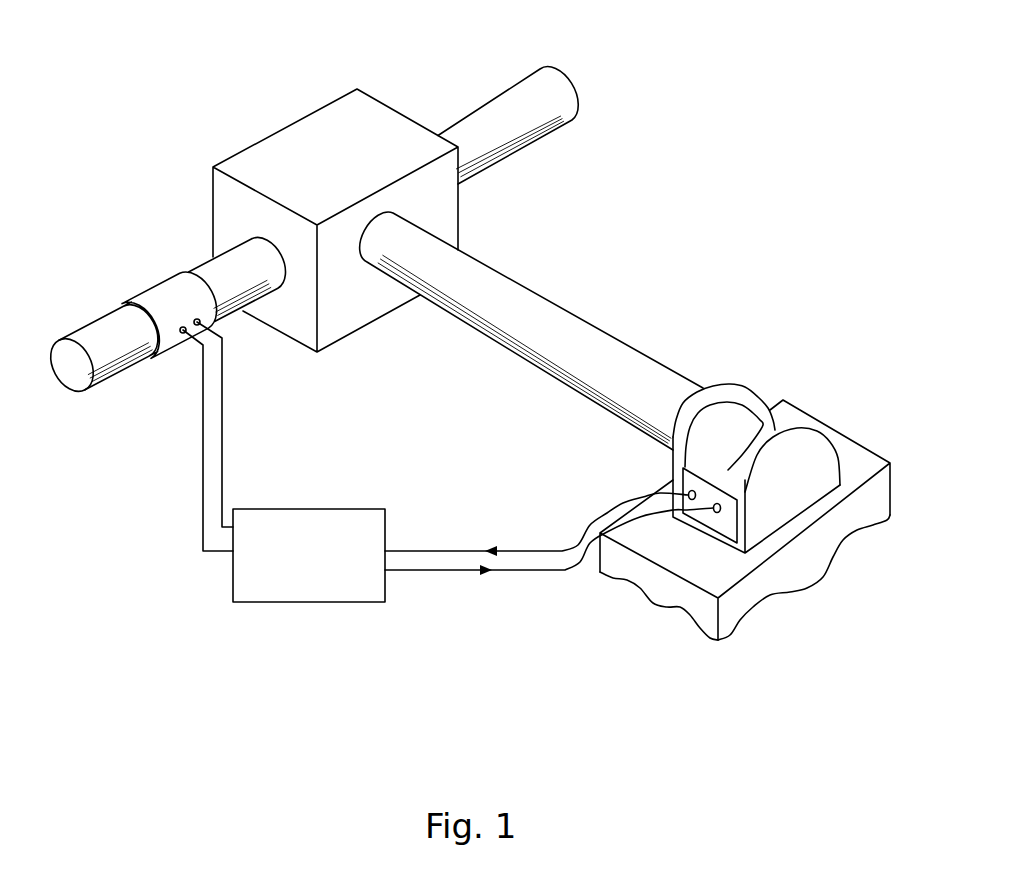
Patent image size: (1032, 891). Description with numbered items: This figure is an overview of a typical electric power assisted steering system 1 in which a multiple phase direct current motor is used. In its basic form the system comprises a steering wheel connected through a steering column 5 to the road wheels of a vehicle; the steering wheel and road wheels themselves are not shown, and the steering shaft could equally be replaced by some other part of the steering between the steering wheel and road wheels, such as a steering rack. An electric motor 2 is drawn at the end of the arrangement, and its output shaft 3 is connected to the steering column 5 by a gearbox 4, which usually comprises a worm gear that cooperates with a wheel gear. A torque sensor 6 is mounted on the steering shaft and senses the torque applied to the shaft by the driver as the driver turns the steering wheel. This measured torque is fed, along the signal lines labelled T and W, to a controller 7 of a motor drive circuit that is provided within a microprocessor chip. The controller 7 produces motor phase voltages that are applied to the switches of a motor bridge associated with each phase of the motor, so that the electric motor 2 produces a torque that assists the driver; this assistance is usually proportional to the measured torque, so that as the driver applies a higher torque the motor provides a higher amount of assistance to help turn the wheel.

The electric power assisted steering system 1 is at (668, 210).
The electric motor 2 is at (802, 470).
The output shaft 3 is at (477, 283).
The gearbox 4 is at (326, 169).
The steering column 5 is at (458, 100).
The torque sensor 6 is at (153, 297).
The controller 7 is at (321, 569).
The torque signal line T is at (204, 440).
The angle signal line W is at (228, 424).